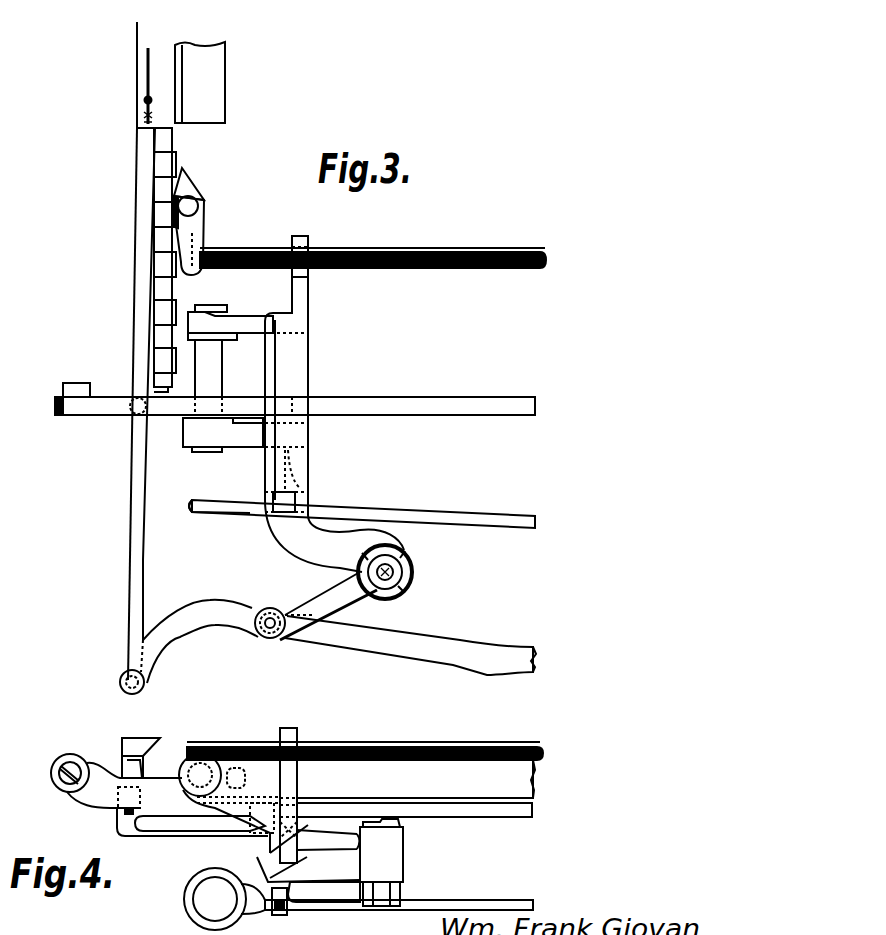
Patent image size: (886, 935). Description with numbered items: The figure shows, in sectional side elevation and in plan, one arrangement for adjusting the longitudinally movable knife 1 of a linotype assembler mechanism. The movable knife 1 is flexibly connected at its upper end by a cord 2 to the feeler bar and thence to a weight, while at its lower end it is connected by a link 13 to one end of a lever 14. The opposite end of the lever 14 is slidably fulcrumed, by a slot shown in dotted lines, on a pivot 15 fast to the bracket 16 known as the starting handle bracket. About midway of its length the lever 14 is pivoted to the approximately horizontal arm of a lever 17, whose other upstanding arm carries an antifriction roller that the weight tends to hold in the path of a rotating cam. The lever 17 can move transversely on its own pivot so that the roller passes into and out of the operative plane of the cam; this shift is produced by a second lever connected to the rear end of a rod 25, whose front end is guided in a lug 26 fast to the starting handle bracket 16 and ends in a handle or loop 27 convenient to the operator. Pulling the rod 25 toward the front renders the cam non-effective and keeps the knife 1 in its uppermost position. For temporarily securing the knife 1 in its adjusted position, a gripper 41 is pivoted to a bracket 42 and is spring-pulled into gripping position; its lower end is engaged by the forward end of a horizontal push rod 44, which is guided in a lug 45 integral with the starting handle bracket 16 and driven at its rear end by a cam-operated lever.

In FIG. 3, the longitudinally movable knife 1 is at (172, 310).
In FIG. 4, the longitudinally movable knife 1 is at (153, 746).
In FIG. 3, the cord 2 is at (149, 84).
In FIG. 3, the link 13 is at (139, 537).
In FIG. 4, the link 13 is at (118, 806).
In FIG. 3, the lever 14 is at (243, 607).
In FIG. 4, the lever 14 is at (401, 839).
In FIG. 3, the pivot 15 is at (440, 418).
In FIG. 4, the pivot 15 is at (416, 779).
In FIG. 3, the starting handle bracket 16 is at (306, 358).
In FIG. 4, the starting handle bracket 16 is at (252, 838).
In FIG. 3, the lever 17 is at (339, 641).
In FIG. 4, the lever 17 is at (510, 819).
In FIG. 3, the link or rod 25 is at (428, 514).
In FIG. 4, the link or rod 25 is at (404, 894).
In FIG. 3, the lug 26 is at (296, 500).
In FIG. 4, the lug 26 is at (287, 913).
In FIG. 3, the handle or loop 27 is at (216, 505).
In FIG. 4, the handle or loop 27 is at (212, 876).
In FIG. 3, the gripper 41 is at (200, 231).
In FIG. 3, the bracket 42 is at (199, 203).
In FIG. 3, the horizontal push rod 44 is at (358, 256).
In FIG. 4, the horizontal push rod 44 is at (268, 750).
In FIG. 3, the lug 45 is at (301, 240).
In FIG. 4, the lug 45 is at (290, 787).